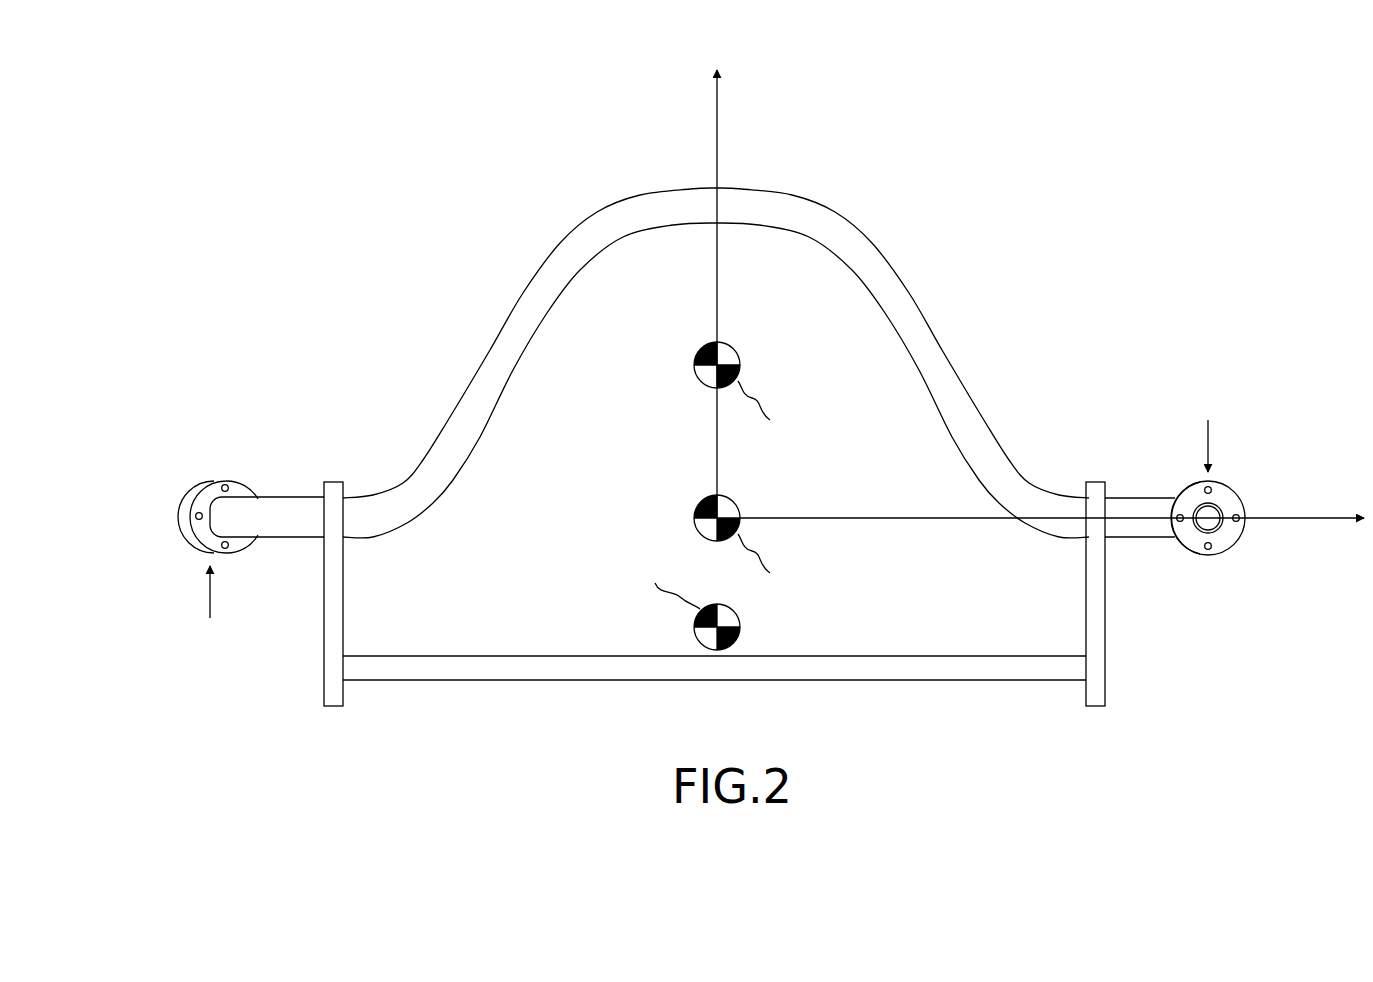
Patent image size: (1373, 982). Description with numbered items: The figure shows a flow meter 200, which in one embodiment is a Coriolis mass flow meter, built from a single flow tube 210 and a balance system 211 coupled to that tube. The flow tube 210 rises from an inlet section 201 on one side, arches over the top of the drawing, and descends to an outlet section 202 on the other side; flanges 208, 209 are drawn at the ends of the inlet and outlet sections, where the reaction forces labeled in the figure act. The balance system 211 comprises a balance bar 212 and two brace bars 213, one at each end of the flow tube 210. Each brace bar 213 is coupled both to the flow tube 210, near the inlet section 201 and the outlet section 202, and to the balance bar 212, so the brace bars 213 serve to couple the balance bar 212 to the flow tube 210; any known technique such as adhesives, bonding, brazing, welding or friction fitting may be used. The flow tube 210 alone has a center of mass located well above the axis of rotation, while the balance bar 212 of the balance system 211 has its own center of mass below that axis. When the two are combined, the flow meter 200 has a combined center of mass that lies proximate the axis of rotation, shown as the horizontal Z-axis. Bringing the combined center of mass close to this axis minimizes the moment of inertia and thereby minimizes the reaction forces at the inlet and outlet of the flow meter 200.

The flow meter 200 is at (739, 430).
The inlet section 201 is at (268, 540).
The outlet section 202 is at (1170, 540).
The input flange 208 is at (186, 530).
The output flange 209 is at (1226, 542).
The flow tube 210 is at (945, 346).
The balance system 211 is at (788, 637).
The balance bar 212 is at (890, 668).
The brace bars 213 is at (333, 707).